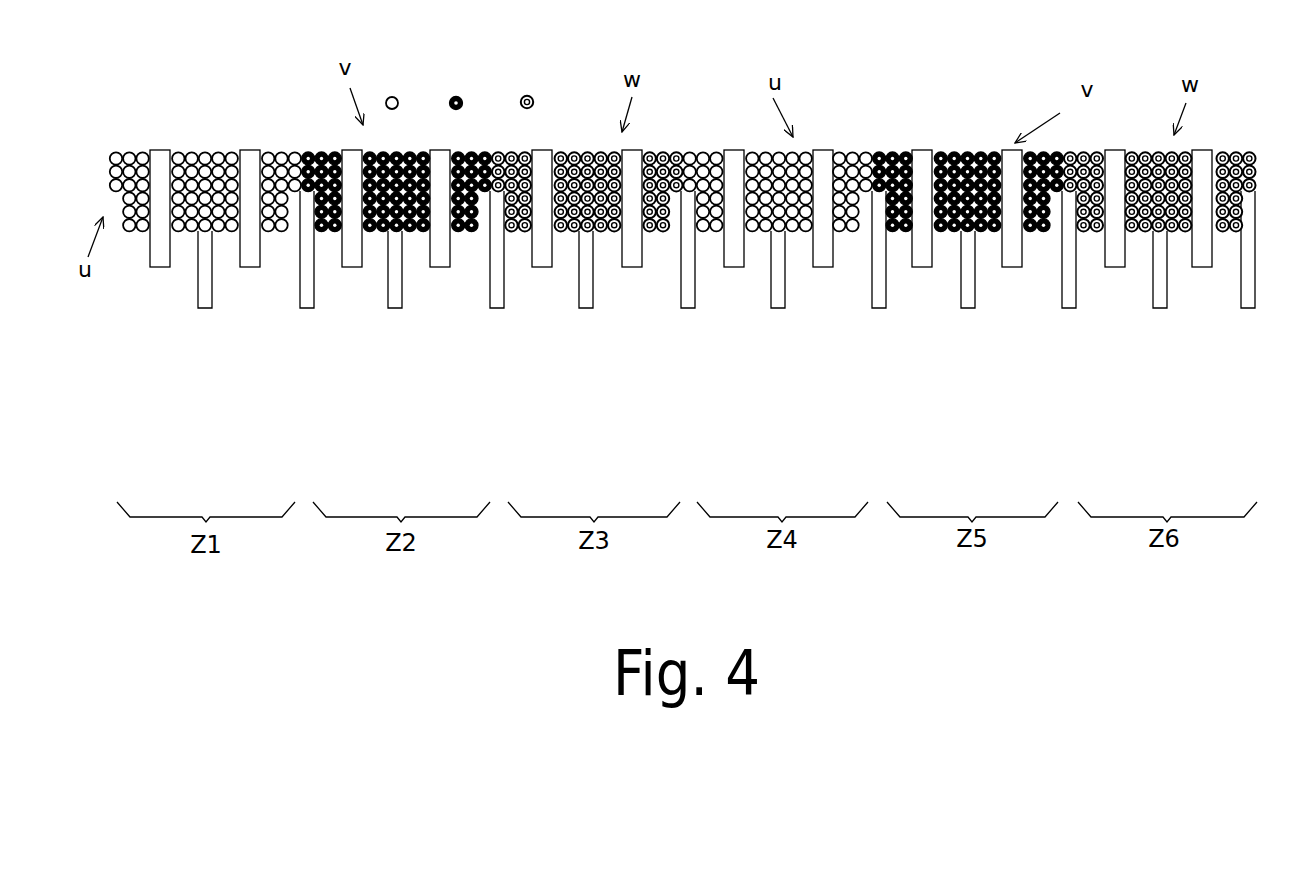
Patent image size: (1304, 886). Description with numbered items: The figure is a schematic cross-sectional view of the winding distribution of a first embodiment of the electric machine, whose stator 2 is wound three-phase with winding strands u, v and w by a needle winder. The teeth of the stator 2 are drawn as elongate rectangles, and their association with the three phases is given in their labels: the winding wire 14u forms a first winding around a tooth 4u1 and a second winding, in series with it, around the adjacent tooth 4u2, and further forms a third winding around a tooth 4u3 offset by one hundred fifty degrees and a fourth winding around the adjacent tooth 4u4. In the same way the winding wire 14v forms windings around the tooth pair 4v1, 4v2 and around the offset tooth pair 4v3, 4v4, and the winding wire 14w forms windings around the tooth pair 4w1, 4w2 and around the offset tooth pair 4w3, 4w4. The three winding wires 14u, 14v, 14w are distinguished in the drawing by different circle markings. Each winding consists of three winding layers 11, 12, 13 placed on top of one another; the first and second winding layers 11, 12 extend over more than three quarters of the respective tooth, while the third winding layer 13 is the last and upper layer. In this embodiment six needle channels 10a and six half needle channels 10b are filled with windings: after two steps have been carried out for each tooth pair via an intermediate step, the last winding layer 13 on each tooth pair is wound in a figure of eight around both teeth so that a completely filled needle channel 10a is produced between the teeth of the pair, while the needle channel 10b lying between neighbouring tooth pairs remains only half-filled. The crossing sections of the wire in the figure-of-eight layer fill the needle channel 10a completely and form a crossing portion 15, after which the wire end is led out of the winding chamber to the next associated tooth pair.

The stator 2 is at (687, 100).
The tooth 4u1 is at (158, 263).
The tooth 4u2 is at (248, 263).
The tooth 4u3 is at (732, 263).
The tooth 4u4 is at (821, 263).
The tooth 4v1 is at (350, 263).
The tooth 4v2 is at (438, 263).
The tooth 4v3 is at (920, 263).
The tooth 4v4 is at (1010, 263).
The tooth 4w1 is at (540, 263).
The tooth 4w2 is at (630, 263).
The tooth 4w3 is at (1113, 263).
The tooth 4w4 is at (1200, 263).
The needle channel 10a is at (1165, 331).
The half needle channel 10b is at (1253, 330).
The first winding layer 11 is at (173, 150).
The second winding layer 12 is at (135, 148).
The third winding layer 13 is at (123, 148).
The winding wire 14u is at (392, 92).
The winding wire 14v is at (457, 90).
The winding wire 14w is at (527, 90).
The crossing portion 15 is at (205, 148).